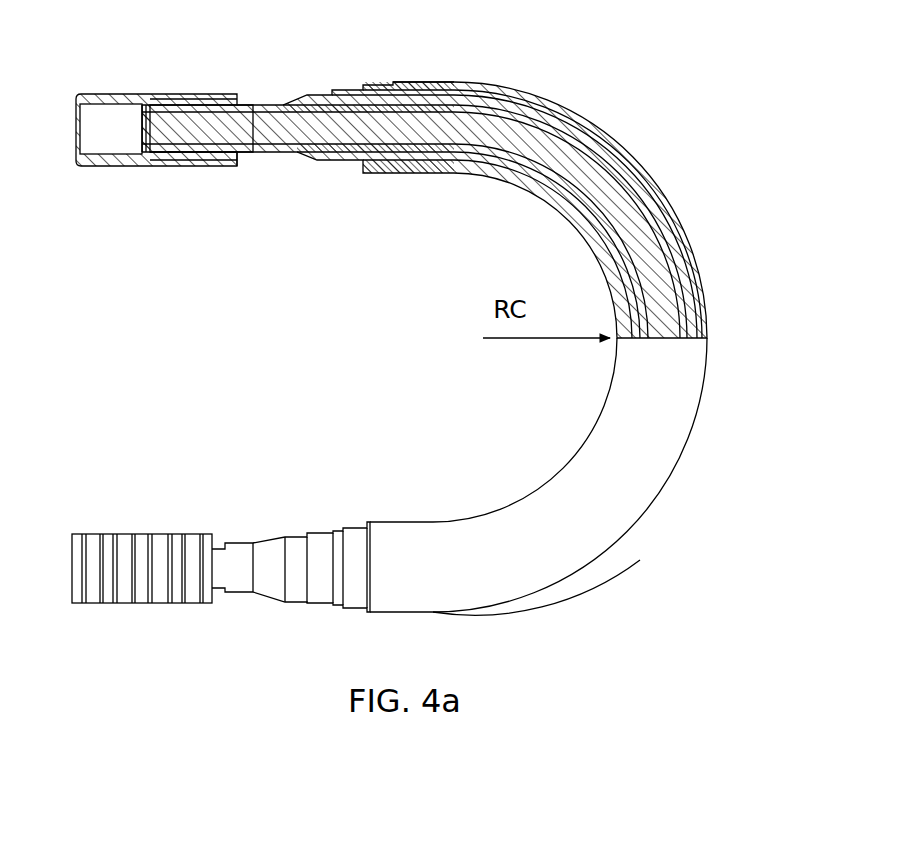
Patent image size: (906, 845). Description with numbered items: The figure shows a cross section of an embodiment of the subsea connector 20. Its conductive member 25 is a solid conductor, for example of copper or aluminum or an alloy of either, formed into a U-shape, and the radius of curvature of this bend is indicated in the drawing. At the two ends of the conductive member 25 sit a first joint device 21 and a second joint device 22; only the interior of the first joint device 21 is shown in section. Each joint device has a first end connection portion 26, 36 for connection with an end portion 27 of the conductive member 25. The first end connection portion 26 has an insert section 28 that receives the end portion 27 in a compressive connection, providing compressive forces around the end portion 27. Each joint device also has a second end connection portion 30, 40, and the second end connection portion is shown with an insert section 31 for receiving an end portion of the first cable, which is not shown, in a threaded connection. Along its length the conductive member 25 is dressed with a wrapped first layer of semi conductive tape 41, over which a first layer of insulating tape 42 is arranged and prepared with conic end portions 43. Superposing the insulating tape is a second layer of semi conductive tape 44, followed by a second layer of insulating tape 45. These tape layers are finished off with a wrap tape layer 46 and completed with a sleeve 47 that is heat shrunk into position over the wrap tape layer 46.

The subsea connector 20 is at (698, 472).
The first joint device 21 is at (379, 337).
The second joint device 22 is at (217, 520).
The conductive member 25 is at (424, 378).
The first end connection portion 26 is at (183, 97).
The end portion 27 is at (196, 165).
The insert section 28 is at (230, 97).
The second end connection portion 30 is at (144, 96).
The insert section 31 is at (112, 114).
The first end connection portion 36 is at (183, 533).
The second end connection portion 40 is at (95, 533).
The first layer of semi conductive tape 41 is at (265, 154).
The first layer of insulating tape 42 is at (328, 166).
The conic end portions 43 is at (298, 162).
The second layer of semi conductive tape 44 is at (347, 163).
The second layer of insulating tape 45 is at (383, 174).
The wrap tape layer 46 is at (397, 175).
The sleeve 47 is at (558, 588).